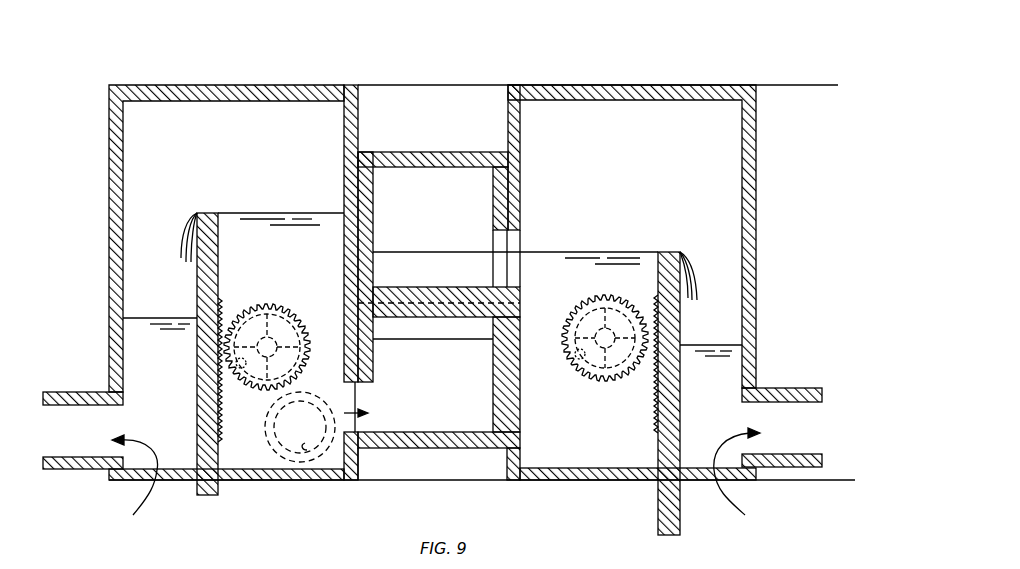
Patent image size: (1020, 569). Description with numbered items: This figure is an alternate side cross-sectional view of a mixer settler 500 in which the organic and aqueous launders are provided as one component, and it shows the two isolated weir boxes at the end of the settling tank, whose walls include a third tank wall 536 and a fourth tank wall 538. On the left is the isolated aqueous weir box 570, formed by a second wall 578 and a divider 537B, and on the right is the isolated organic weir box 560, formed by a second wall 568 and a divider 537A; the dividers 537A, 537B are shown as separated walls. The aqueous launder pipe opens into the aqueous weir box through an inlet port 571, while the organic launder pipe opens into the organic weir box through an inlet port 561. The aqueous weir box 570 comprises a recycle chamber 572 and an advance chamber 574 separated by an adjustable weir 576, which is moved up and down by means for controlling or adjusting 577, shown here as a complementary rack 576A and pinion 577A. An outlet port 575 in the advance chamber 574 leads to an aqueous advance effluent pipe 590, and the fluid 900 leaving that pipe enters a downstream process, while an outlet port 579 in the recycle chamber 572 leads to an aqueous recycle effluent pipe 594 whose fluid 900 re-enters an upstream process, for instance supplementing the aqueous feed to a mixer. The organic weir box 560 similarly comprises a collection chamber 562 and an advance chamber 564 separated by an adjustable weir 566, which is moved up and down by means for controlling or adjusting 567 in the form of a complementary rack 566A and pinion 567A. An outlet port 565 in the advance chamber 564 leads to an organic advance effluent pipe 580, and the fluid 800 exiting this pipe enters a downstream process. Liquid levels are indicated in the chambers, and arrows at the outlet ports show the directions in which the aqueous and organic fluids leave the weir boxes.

The mixer settler 500 is at (822, 52).
The fourth tank wall 538 is at (194, 282).
The second wall 578 is at (109, 272).
The isolated aqueous weir box 570 is at (364, 106).
The advance chamber 574 is at (138, 222).
The adjustable weir 576 is at (197, 290).
The rack 576A is at (222, 412).
The recycle chamber 572 is at (266, 253).
The means for controlling or adjusting 577 is at (273, 333).
The pinion 577A is at (244, 310).
The outlet port 579 is at (286, 432).
The aqueous recycle effluent pipe 594 is at (307, 450).
The fluid 900 is at (146, 423).
The fluid 800 is at (414, 279).
The aqueous advance effluent pipe 590 is at (72, 392).
The outlet port 575 is at (130, 484).
The third tank wall 536 is at (414, 112).
The divider 537B is at (358, 136).
The divider 537A is at (508, 136).
The inlet port 561 is at (522, 238).
The inlet port 571 is at (342, 413).
The isolated organic weir box 560 is at (674, 282).
The second wall 568 is at (757, 157).
The collection chamber 562 is at (583, 240).
The adjustable weir 566 is at (680, 324).
The rack 566A is at (655, 410).
The advance chamber 564 is at (702, 286).
The means for controlling or adjusting 567 is at (590, 350).
The pinion 567A is at (567, 323).
The organic advance effluent pipe 580 is at (795, 388).
The outlet port 565 is at (742, 481).